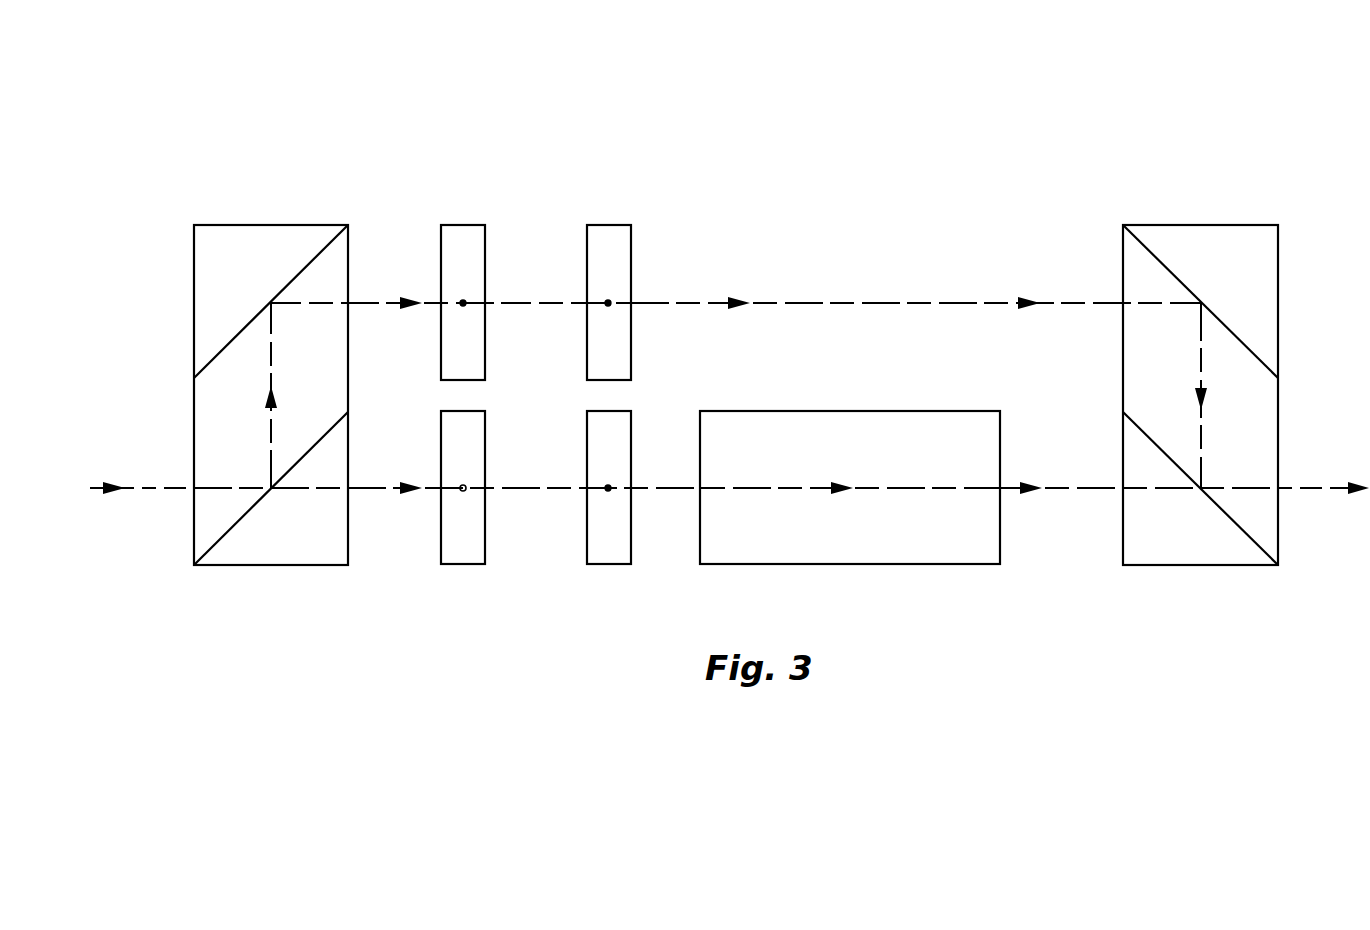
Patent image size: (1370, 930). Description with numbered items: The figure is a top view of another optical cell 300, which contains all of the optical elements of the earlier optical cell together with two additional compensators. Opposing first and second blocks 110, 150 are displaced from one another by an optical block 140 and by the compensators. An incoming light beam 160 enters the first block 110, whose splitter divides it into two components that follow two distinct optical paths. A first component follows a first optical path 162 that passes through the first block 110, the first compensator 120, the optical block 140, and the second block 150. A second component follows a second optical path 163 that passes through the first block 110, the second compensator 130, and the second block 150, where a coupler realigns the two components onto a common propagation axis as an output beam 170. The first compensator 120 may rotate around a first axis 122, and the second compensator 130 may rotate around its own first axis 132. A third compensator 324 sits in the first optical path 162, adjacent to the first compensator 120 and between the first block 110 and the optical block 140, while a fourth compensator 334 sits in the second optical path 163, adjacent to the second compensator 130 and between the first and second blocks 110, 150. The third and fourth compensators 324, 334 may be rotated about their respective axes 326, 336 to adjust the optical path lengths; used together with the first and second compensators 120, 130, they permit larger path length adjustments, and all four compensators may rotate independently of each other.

The optical cell 300 is at (375, 97).
The first block 110 is at (286, 225).
The first compensator 120 is at (477, 564).
The first axis of rotation 122 is at (465, 490).
The second compensator 130 is at (477, 225).
The first axis of rotation 132 is at (463, 303).
The third compensator 324 is at (623, 564).
The axis 326 is at (610, 490).
The fourth compensator 334 is at (623, 225).
The axis 336 is at (608, 303).
The optical block 140 is at (883, 564).
The second block 150 is at (1183, 225).
The light beam 160 is at (178, 485).
The first optical path 162 is at (1050, 492).
The second optical path 163 is at (860, 303).
The output beam 170 is at (1297, 490).